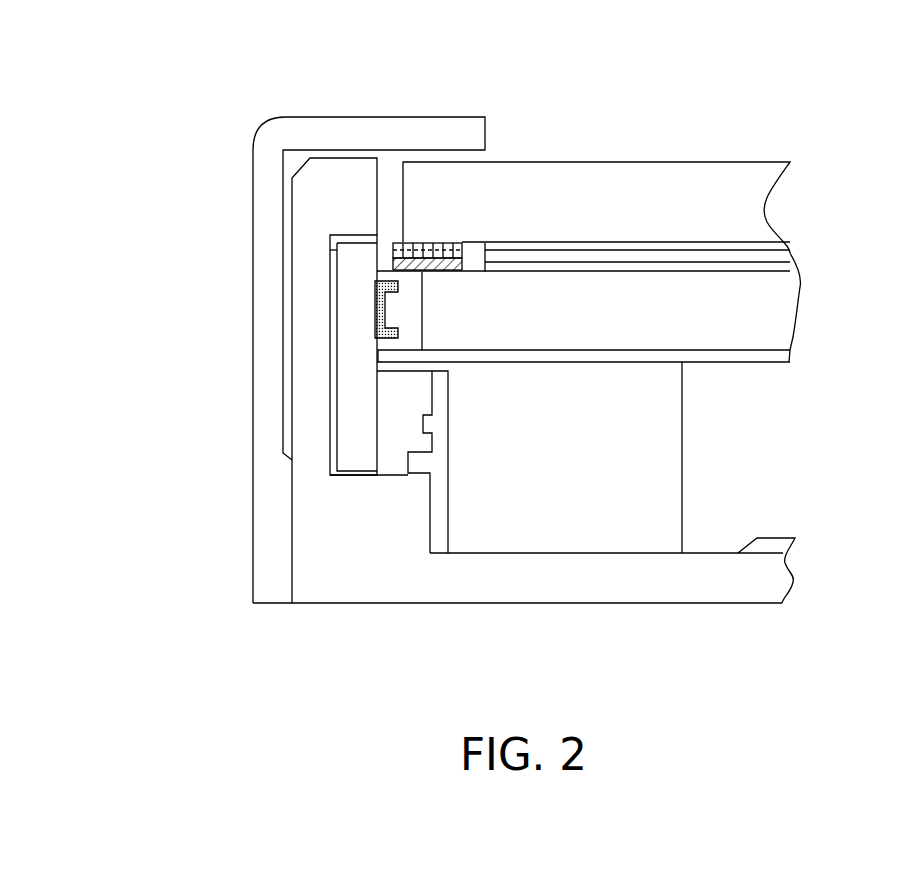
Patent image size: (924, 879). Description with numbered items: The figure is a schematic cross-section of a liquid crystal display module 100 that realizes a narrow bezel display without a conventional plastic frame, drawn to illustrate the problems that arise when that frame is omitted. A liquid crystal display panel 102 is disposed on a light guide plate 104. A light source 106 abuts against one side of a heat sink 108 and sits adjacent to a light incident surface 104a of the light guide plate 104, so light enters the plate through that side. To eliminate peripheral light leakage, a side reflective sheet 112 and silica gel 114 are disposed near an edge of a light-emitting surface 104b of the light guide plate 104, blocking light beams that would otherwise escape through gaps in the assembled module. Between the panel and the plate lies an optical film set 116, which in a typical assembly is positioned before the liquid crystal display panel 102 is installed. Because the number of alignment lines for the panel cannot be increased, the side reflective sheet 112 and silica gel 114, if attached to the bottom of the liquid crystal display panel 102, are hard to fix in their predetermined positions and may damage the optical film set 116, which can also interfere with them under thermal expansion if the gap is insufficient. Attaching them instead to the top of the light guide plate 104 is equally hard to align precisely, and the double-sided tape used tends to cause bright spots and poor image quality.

The liquid crystal display module 100 is at (92, 106).
The liquid crystal display panel 102 is at (605, 178).
The light guide plate 104 is at (758, 318).
The light incident surface 104a is at (432, 313).
The light-emitting surface 104b is at (592, 273).
The light source 106 is at (392, 312).
The heat sink 108 is at (307, 387).
The side reflective sheet 112 is at (437, 261).
The silica gel 114 is at (430, 249).
The optical film set 116 is at (793, 238).